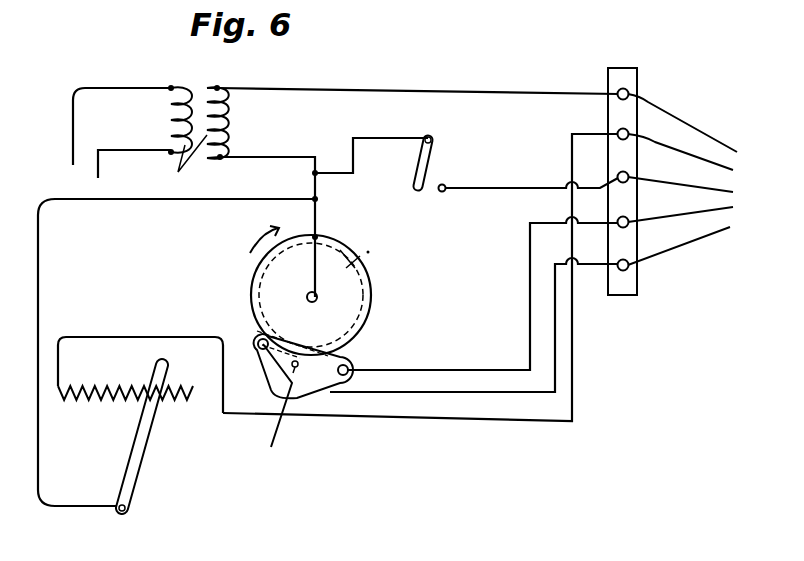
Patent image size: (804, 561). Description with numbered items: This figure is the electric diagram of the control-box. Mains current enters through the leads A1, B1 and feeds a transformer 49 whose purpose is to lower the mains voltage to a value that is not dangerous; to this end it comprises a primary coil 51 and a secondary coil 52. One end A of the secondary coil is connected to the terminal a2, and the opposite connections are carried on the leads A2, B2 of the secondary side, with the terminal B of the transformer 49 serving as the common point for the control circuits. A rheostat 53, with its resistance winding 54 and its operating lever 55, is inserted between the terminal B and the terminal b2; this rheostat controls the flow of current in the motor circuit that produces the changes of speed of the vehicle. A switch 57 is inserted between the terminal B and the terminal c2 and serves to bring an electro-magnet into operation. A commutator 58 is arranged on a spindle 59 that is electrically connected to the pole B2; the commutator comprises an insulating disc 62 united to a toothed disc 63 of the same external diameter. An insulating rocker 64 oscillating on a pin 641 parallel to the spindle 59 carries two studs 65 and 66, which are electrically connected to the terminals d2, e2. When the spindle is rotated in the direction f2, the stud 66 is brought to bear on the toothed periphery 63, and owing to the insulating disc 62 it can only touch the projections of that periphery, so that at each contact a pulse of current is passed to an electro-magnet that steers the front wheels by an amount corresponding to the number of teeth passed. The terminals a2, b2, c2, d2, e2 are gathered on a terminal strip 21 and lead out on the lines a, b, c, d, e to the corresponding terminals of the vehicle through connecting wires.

The terminal board 21 is at (646, 190).
The transformer 49 is at (192, 164).
The primary coil 51 is at (171, 119).
The secondary coil 52 is at (232, 122).
The rheostat 53 is at (117, 357).
The resistance winding 54 is at (102, 400).
The operating lever 55 is at (145, 452).
The switch 57 is at (439, 163).
The commutator 58 is at (377, 298).
The spindle 59 is at (326, 299).
The insulating disc 62 is at (333, 263).
The toothed disc 63 is at (383, 251).
The insulating rocker 64 is at (303, 366).
The pin 641 is at (285, 399).
The stud 65 is at (351, 365).
The stud 66 is at (259, 341).
The lead A1 is at (110, 75).
The end of secondary coil A is at (213, 75).
The terminal A2 is at (255, 75).
The lead B1 is at (119, 137).
The terminal of transformer B is at (212, 171).
The pole B2 is at (266, 167).
The terminal a2 is at (620, 103).
The terminal b2 is at (620, 143).
The terminal c2 is at (620, 186).
The terminal d2 is at (620, 231).
The terminal e2 is at (620, 274).
The lead a is at (685, 123).
The lead b is at (688, 156).
The lead c is at (688, 187).
The lead d is at (690, 208).
The lead e is at (685, 240).
The direction of rotation f2 is at (254, 242).